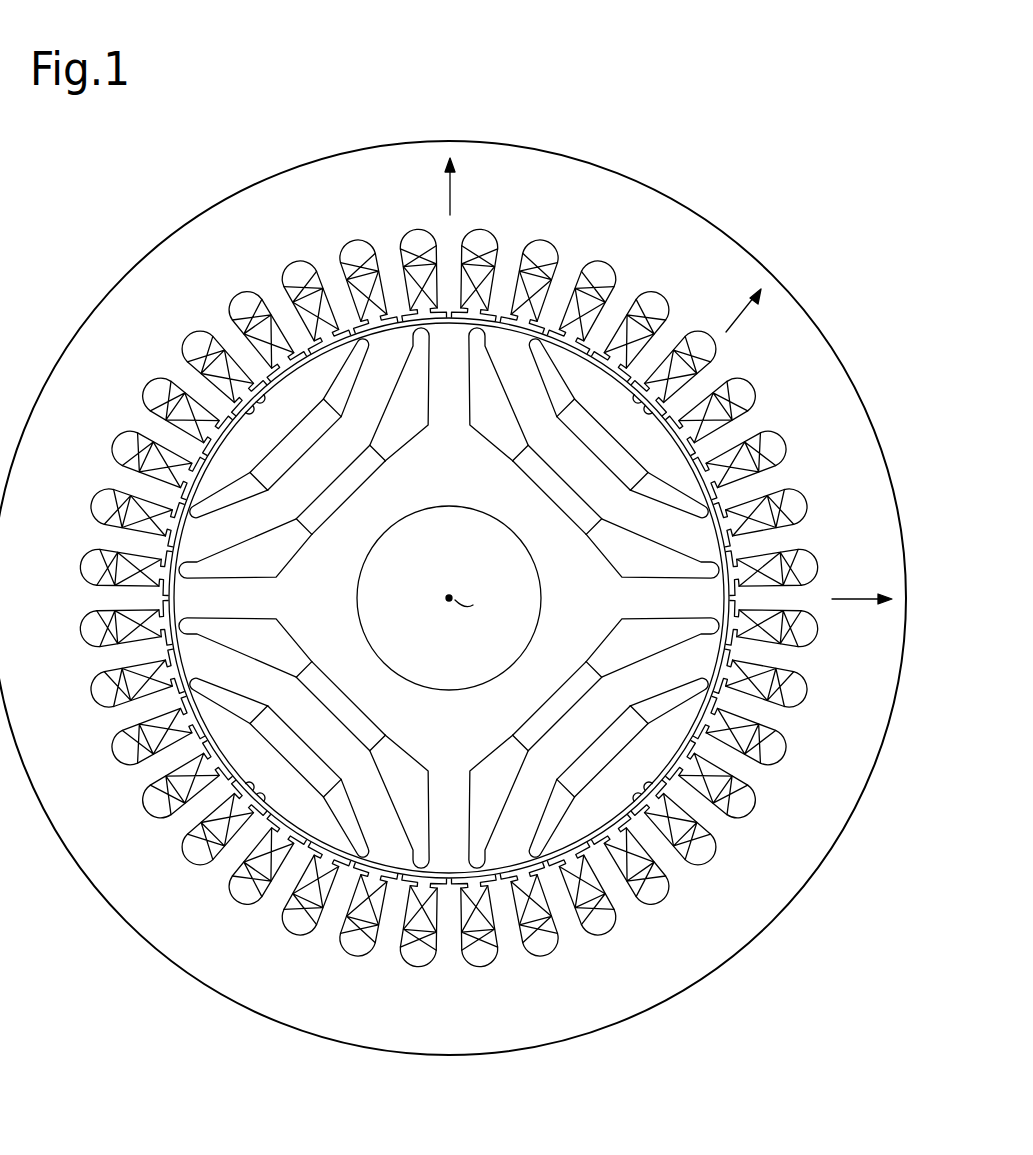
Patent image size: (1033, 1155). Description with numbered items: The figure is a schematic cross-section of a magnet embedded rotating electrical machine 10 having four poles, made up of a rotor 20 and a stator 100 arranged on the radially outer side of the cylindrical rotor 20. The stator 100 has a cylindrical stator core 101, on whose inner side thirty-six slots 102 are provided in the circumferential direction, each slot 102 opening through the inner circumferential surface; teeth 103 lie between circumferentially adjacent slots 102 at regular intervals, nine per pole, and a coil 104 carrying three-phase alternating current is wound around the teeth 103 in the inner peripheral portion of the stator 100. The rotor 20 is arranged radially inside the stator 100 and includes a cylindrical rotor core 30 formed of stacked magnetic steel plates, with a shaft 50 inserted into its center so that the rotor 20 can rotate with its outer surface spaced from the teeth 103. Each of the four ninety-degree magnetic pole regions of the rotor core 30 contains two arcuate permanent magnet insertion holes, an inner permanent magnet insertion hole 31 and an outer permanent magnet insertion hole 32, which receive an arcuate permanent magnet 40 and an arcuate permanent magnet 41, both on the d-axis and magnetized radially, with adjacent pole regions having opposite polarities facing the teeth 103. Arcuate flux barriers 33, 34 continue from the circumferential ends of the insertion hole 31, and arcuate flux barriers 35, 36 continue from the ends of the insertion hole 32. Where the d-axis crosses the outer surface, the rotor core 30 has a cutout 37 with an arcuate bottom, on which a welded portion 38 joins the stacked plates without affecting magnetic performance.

The rotating electrical machine 10 is at (836, 249).
The stator 100 is at (863, 398).
The stator core 101 is at (803, 303).
The slot 102 is at (604, 271).
The teeth 103 is at (505, 272).
The coil 104 is at (603, 323).
The rotor 20 is at (490, 526).
The rotor core 30 is at (442, 508).
The permanent magnet insertion hole 31 is at (338, 510).
The permanent magnet insertion hole 32 is at (288, 468).
The flux barrier 33 is at (297, 552).
The flux barrier 34 is at (408, 433).
The flux barrier 35 is at (211, 511).
The flux barrier 36 is at (348, 392).
The cutout (recess) 37 is at (278, 390).
The welded portion 38 is at (258, 410).
The permanent magnet 40 is at (367, 473).
The permanent magnet 41 is at (322, 424).
The shaft 50 is at (548, 594).